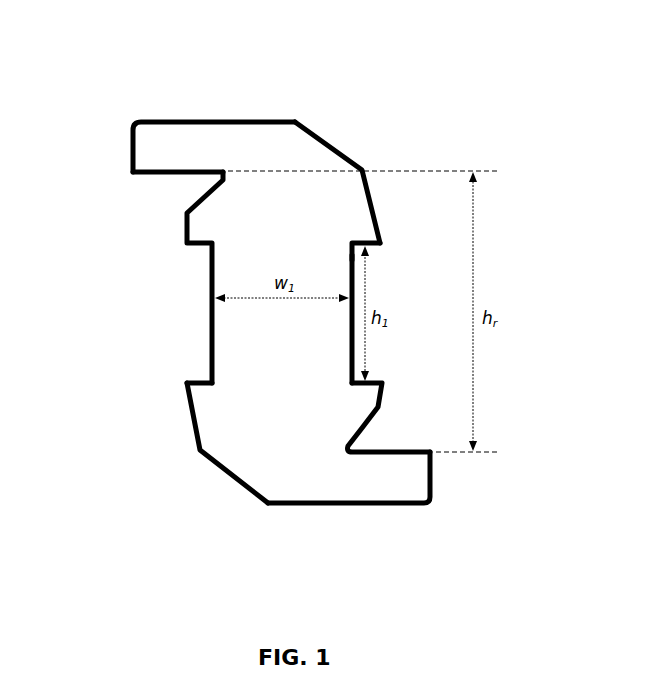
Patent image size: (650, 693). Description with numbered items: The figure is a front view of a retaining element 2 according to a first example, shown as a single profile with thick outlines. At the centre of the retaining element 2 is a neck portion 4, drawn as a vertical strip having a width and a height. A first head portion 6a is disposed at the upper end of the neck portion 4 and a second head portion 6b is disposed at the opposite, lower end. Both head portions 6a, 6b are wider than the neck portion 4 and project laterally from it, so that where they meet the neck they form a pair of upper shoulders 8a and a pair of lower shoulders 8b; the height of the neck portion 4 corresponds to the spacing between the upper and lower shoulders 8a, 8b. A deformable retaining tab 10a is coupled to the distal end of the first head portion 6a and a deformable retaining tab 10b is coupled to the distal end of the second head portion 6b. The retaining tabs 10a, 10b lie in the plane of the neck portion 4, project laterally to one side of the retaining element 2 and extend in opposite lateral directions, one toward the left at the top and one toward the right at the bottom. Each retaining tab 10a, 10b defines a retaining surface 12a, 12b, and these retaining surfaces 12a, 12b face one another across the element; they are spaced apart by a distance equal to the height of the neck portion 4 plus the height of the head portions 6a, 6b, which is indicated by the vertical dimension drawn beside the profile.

The retaining element 2 is at (270, 60).
The neck portion 4 is at (243, 327).
The first head portion 6a is at (328, 190).
The second head portion 6b is at (253, 413).
The upper shoulders 8a is at (383, 232).
The lower shoulders 8b is at (203, 398).
The deformable retaining tab 10a is at (167, 152).
The deformable retaining tab 10b is at (400, 478).
The retaining surface 12a is at (160, 178).
The retaining surface 12b is at (392, 452).